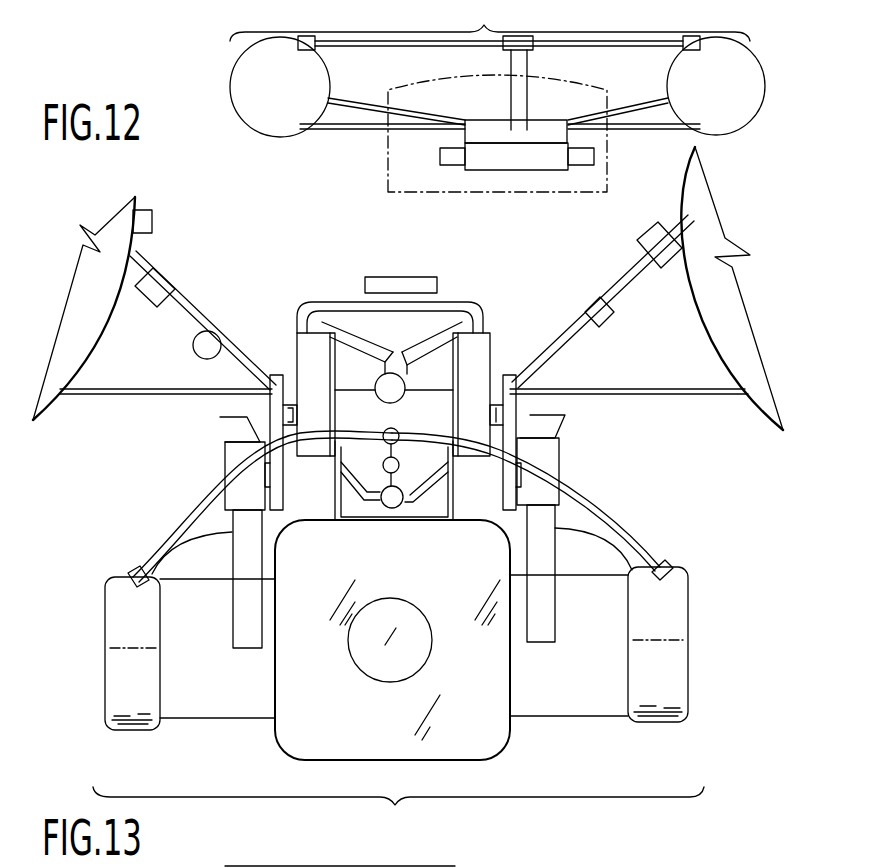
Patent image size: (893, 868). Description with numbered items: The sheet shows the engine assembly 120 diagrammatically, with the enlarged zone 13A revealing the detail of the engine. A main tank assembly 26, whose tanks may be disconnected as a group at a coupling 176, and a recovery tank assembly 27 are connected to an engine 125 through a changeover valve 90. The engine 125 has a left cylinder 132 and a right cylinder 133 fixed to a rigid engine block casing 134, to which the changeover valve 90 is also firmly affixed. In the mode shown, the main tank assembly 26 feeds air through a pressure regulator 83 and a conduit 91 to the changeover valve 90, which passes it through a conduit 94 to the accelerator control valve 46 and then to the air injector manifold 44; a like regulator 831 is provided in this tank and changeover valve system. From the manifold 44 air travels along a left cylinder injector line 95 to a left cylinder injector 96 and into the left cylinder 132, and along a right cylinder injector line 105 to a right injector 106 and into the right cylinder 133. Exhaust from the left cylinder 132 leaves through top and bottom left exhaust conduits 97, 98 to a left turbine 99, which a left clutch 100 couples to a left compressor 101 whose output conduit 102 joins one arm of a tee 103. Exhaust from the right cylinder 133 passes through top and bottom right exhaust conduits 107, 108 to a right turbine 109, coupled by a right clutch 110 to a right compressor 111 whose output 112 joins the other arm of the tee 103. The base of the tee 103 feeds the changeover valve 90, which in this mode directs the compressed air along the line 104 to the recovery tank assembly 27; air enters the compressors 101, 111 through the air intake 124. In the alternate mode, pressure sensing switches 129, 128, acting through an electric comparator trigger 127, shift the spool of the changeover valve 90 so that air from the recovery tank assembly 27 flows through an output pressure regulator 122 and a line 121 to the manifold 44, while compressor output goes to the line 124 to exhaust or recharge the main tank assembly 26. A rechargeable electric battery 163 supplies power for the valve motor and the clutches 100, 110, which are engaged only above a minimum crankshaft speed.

In FIG. 12, the engine assembly 120 is at (490, 20).
In FIG. 12, the recovery tank assembly 27 is at (293, 98).
In FIG. 13, the recovery tank assembly 27 is at (94, 351).
In FIG. 12, the main tank assembly 26 is at (729, 95).
In FIG. 13, the main tank assembly 26 is at (737, 309).
In FIG. 12, the pressure sensing switch 129 is at (318, 47).
In FIG. 13, the pressure sensing switch 129 is at (150, 222).
In FIG. 12, the pressure sensing switch 128 is at (684, 44).
In FIG. 12, the electric comparator trigger 127 is at (510, 46).
In FIG. 12, the line to recovery tank assembly 104 is at (345, 128).
In FIG. 13, the line to recovery tank assembly 104 is at (190, 392).
In FIG. 12, the air intake 124 is at (652, 128).
In FIG. 13, the air intake 124 is at (628, 386).
In FIG. 12, the line 121 is at (395, 117).
In FIG. 13, the line 121 is at (188, 327).
In FIG. 12, the conduit 91 is at (616, 110).
In FIG. 13, the conduit 91 is at (565, 348).
In FIG. 12, the zone 13A is at (376, 181).
In FIG. 12, the changeover valve 90 is at (515, 130).
In FIG. 13, the changeover valve 90 is at (405, 385).
In FIG. 12, the engine block casing 134 is at (517, 158).
In FIG. 13, the engine block casing 134 is at (435, 740).
In FIG. 12, the left cylinder 132 is at (442, 155).
In FIG. 13, the left cylinder 132 is at (250, 700).
In FIG. 12, the right cylinder 133 is at (592, 155).
In FIG. 13, the right cylinder 133 is at (592, 708).
In FIG. 13, the output pressure regulator 122 is at (165, 276).
In FIG. 13, the regulator 831 is at (218, 338).
In FIG. 13, the coupling 176 is at (660, 240).
In FIG. 13, the pressure regulator 83 is at (595, 305).
In FIG. 13, the left compressor 101 is at (310, 400).
In FIG. 13, the right compressor 111 is at (472, 400).
In FIG. 13, the output conduit of the left compressor 102 is at (345, 340).
In FIG. 13, the output of the right compressor 112 is at (448, 331).
In FIG. 13, the tee 103 is at (386, 370).
In FIG. 13, the air injector manifold 44 is at (403, 442).
In FIG. 13, the accelerator control valve 46 is at (384, 467).
In FIG. 13, the conduit 94 is at (400, 480).
In FIG. 13, the left cylinder injector line 95 is at (350, 442).
In FIG. 13, the right cylinder injector line 105 is at (418, 442).
In FIG. 13, the left clutch 100 is at (300, 398).
In FIG. 13, the right clutch 110 is at (505, 380).
In FIG. 13, the left turbine 99 is at (228, 450).
In FIG. 13, the right turbine 109 is at (560, 444).
In FIG. 13, the bottom left exhaust conduit 98 is at (240, 635).
In FIG. 13, the bottom right exhaust conduit 108 is at (545, 635).
In FIG. 13, the top left exhaust conduit 97 is at (178, 543).
In FIG. 13, the top right exhaust conduit 107 is at (587, 572).
In FIG. 13, the left cylinder injector 96 is at (128, 575).
In FIG. 13, the right injector 106 is at (674, 560).
In FIG. 13, the engine 125 is at (398, 809).
In FIG. 13, the rechargeable electric battery 163 is at (472, 866).